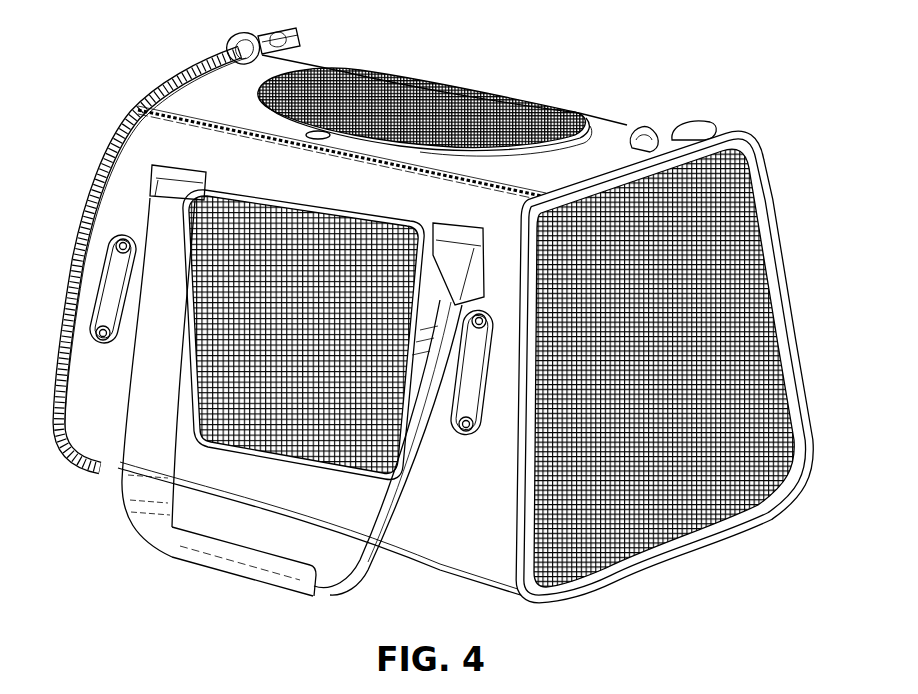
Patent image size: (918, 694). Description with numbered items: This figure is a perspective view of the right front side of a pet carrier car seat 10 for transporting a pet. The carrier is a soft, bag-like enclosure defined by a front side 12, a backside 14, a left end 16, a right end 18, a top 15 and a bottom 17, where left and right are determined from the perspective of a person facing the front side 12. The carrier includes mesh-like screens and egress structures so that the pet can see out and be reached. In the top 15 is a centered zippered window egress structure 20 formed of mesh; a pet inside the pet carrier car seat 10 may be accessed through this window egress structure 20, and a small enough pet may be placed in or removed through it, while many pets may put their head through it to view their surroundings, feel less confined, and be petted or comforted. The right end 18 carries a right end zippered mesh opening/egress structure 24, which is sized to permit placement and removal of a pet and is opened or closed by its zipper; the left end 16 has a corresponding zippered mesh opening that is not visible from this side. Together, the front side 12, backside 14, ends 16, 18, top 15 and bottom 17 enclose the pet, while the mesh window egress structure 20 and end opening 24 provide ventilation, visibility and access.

The pet carrier car seat 10 is at (808, 120).
The front side 12 is at (96, 182).
The backside 14 is at (608, 88).
The top 15 is at (228, 107).
The left end 16 is at (153, 44).
The bottom 17 is at (391, 590).
The right end 18 is at (750, 361).
The window egress structure 20 is at (440, 92).
The right end zippered mesh opening/egress structure 24 is at (750, 243).